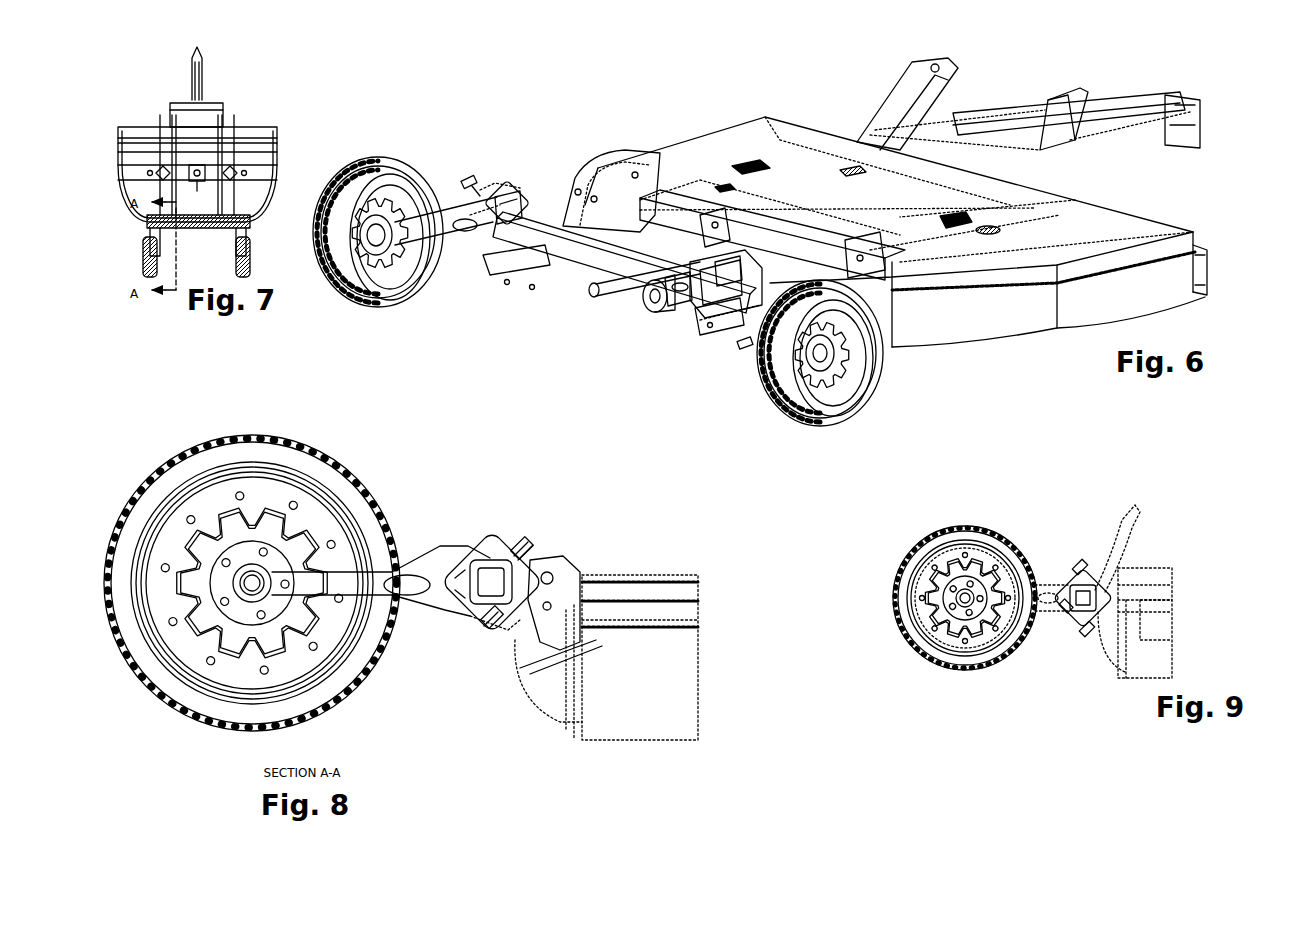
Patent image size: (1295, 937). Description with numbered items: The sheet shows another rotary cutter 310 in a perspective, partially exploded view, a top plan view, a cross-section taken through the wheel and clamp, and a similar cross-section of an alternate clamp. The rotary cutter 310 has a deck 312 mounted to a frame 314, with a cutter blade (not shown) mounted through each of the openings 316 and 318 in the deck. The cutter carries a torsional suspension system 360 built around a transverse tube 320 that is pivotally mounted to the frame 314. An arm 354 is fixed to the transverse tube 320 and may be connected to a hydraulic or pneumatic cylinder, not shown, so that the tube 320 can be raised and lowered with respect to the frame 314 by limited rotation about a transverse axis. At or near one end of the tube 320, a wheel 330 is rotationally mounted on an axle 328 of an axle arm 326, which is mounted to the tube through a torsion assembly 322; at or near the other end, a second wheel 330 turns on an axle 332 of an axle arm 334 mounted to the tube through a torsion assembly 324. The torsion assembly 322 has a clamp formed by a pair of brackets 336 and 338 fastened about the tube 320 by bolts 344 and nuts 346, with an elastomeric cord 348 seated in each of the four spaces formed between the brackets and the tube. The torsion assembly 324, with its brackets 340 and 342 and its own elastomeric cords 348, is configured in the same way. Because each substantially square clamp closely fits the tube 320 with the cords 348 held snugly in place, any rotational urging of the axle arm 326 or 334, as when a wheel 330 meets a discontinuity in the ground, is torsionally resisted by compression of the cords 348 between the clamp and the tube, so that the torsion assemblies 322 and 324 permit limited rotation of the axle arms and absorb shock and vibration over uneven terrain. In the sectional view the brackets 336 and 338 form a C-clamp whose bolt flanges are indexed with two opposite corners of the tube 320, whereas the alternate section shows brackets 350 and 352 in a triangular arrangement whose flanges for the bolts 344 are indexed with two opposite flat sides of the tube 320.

In FIG. 7, the rotary cutter 310 is at (150, 108).
In FIG. 6, the rotary cutter 310 is at (1010, 103).
In FIG. 6, the deck 312 is at (1115, 225).
In FIG. 6, the frame 314 is at (1205, 272).
In FIG. 6, the opening 316 is at (748, 165).
In FIG. 6, the opening 318 is at (950, 220).
In FIG. 6, the transverse tube 320 is at (555, 260).
In FIG. 8, the transverse tube 320 is at (500, 560).
In FIG. 9, the transverse tube 320 is at (1093, 598).
In FIG. 6, the torsion assembly 322 is at (514, 178).
In FIG. 8, the torsion assembly 322 is at (460, 678).
In FIG. 6, the torsion assembly 324 is at (723, 375).
In FIG. 6, the axle arm 326 is at (418, 226).
In FIG. 8, the axle arm 326 is at (273, 597).
In FIG. 6, the axle 328 is at (400, 235).
In FIG. 8, the axle 328 is at (240, 570).
In FIG. 6, the wheel 330 is at (345, 160).
In FIG. 8, the wheel 330 is at (127, 657).
In FIG. 9, the wheel 330 is at (965, 598).
In FIG. 6, the axle 332 is at (603, 290).
In FIG. 6, the axle arm 334 is at (660, 296).
In FIG. 6, the bracket 336 is at (522, 198).
In FIG. 8, the bracket 336 is at (468, 563).
In FIG. 6, the bracket 338 is at (485, 262).
In FIG. 8, the bracket 338 is at (507, 617).
In FIG. 6, the bracket 340 is at (697, 298).
In FIG. 6, the bracket 342 is at (698, 322).
In FIG. 6, the bolt 344 is at (467, 176).
In FIG. 8, the bolt 344 is at (520, 546).
In FIG. 9, the bolt 344 is at (1080, 568).
In FIG. 6, the nut 346 is at (745, 345).
In FIG. 8, the nut 346 is at (537, 553).
In FIG. 9, the nut 346 is at (1087, 630).
In FIG. 6, the elastomeric cord 348 is at (725, 273).
In FIG. 8, the elastomeric cord 348 is at (490, 613).
In FIG. 9, the elastomeric cord 348 is at (1067, 603).
In FIG. 9, the bracket 350 is at (1072, 587).
In FIG. 9, the bracket 352 is at (1098, 596).
In FIG. 6, the arm 354 is at (633, 183).
In FIG. 6, the torsional suspension system 360 is at (492, 142).